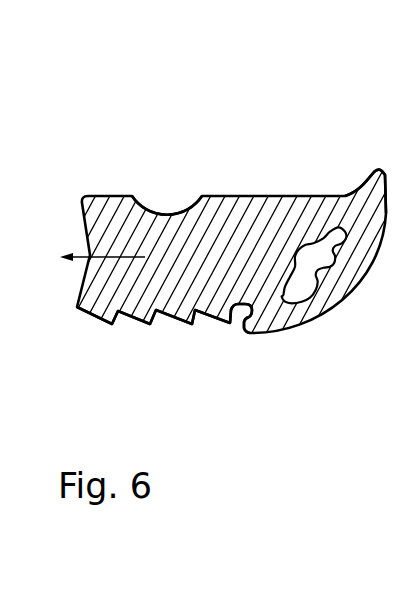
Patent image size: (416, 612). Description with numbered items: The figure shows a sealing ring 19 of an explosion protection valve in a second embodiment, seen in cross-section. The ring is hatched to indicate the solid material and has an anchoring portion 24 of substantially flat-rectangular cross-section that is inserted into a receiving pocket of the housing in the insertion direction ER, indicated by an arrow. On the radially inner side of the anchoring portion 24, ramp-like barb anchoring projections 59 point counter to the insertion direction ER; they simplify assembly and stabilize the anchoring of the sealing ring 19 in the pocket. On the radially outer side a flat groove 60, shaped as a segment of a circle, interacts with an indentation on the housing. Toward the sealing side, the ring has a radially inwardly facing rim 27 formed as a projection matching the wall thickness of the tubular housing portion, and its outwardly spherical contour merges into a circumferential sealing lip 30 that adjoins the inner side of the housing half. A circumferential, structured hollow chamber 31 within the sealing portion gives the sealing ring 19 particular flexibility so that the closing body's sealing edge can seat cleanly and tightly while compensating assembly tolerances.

The sealing ring 19 is at (280, 178).
The anchoring portion 24 is at (215, 221).
The flat groove 60 is at (167, 214).
The sealing lip 30 is at (382, 170).
The hollow chamber 31 is at (307, 268).
The rim 27 is at (247, 333).
The barb anchoring projections 59 is at (223, 321).
The insertion direction ER is at (91, 258).